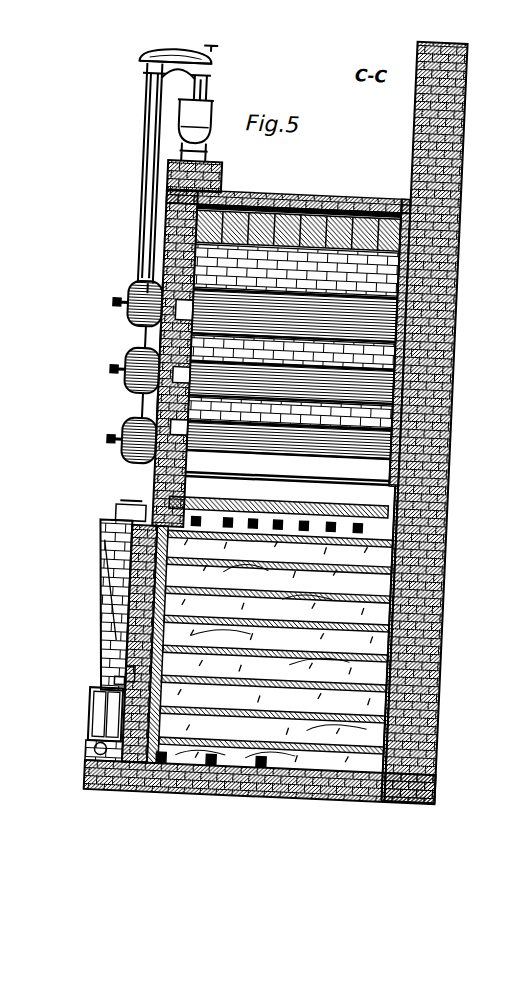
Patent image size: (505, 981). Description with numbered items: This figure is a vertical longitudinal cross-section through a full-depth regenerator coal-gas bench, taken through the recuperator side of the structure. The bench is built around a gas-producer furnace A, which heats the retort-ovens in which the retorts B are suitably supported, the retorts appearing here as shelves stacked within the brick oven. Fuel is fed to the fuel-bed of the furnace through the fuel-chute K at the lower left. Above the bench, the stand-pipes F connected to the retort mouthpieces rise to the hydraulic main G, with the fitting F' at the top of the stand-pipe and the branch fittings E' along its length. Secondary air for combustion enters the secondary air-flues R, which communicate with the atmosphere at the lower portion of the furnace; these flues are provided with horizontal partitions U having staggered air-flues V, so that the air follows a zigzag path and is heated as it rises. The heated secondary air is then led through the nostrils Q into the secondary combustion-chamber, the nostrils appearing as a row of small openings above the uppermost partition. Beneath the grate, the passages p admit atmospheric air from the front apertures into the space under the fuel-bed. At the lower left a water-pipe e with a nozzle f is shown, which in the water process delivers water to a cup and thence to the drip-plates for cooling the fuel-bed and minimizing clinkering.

The stand-pipes F is at (131, 172).
The pipe cap and branch F' is at (163, 82).
The hydraulic main G is at (192, 119).
The valves E' is at (118, 370).
The retorts B is at (453, 448).
The gas-producer furnace A is at (158, 491).
The fuel-chute K is at (140, 539).
The water-pipe e is at (136, 679).
The nozzle f is at (127, 688).
The nostrils Q is at (201, 524).
The horizontal partitions U is at (455, 701).
The secondary air-flues R is at (462, 661).
The staggered air-flues V is at (275, 651).
The passages p is at (180, 768).